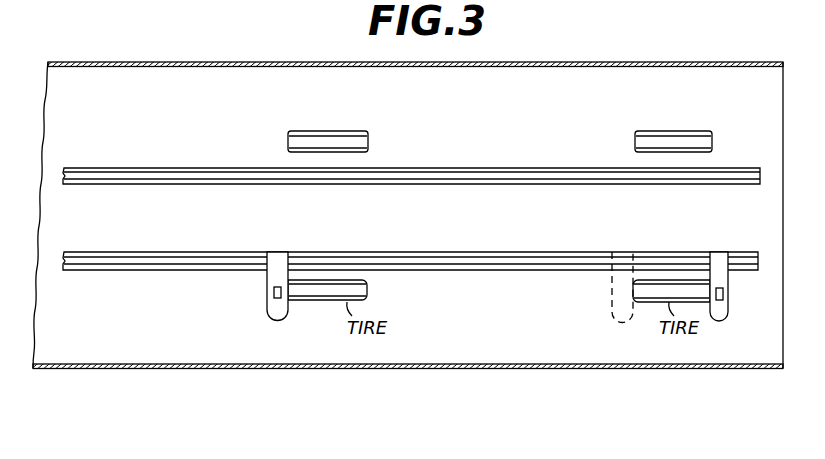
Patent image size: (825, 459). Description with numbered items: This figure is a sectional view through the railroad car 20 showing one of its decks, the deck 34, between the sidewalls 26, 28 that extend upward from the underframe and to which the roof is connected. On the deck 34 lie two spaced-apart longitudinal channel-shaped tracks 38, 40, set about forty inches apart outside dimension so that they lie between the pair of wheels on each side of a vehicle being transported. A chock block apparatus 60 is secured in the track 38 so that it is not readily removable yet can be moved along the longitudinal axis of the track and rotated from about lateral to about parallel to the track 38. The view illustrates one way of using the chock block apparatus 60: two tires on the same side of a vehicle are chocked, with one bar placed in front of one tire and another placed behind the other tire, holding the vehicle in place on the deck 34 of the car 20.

The railroad car 20 is at (408, 233).
The sidewall 26 is at (384, 370).
The sidewall 28 is at (198, 62).
The deck 34 is at (511, 114).
The track 38 is at (492, 271).
The track 40 is at (537, 167).
The chock block apparatus 60 is at (262, 282).